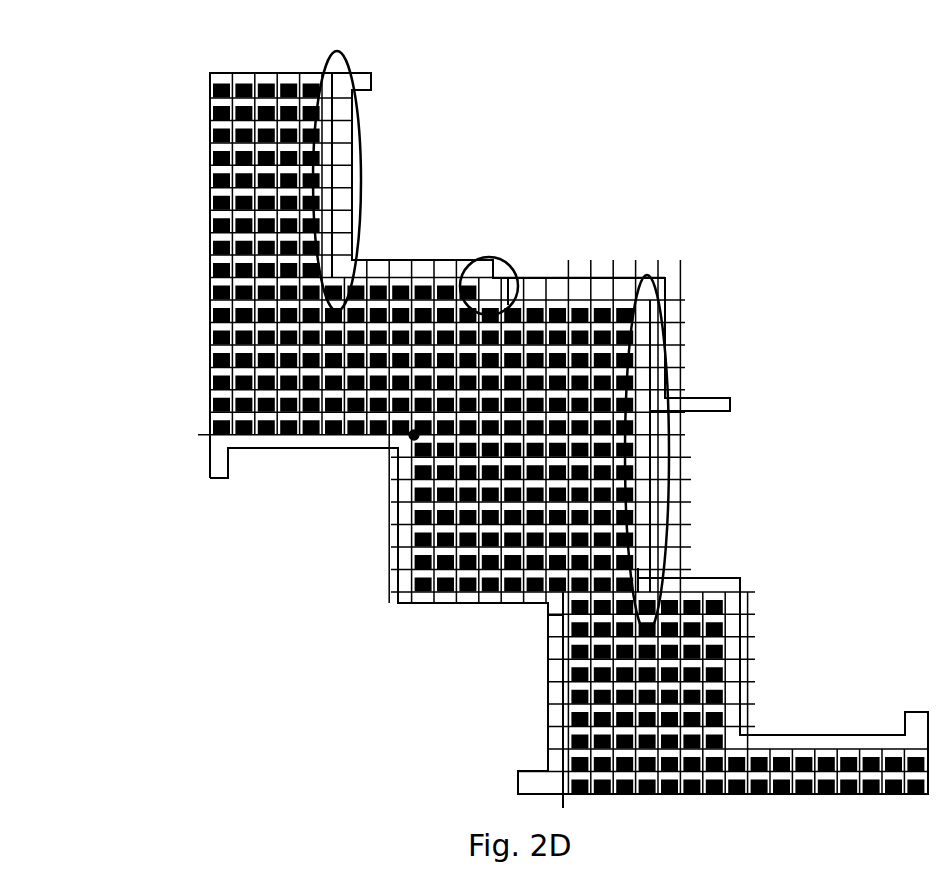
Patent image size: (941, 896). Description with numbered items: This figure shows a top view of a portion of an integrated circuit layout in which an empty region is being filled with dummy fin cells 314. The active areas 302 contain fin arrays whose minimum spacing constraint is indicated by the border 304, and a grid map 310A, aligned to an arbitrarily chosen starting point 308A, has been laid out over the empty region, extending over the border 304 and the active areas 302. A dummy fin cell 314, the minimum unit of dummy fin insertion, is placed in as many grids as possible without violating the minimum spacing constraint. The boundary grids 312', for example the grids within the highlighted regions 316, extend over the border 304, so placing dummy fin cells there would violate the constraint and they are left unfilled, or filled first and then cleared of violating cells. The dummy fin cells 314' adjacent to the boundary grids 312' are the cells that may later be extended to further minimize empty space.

The active area 302 is at (690, 322).
The border 304 is at (652, 415).
The starting point 308A is at (400, 429).
The grid map 310A is at (206, 246).
The boundary grid 312' is at (381, 175).
The dummy fin cell 314 is at (201, 259).
The dummy fin cell adjacent to boundary grid 314' is at (371, 181).
The highlighted region 316 is at (646, 366).